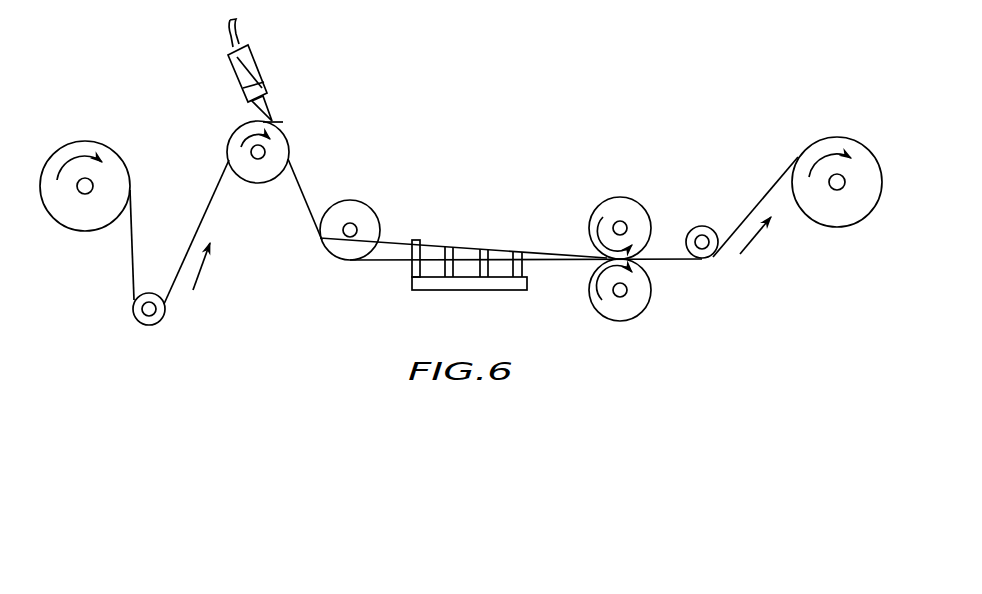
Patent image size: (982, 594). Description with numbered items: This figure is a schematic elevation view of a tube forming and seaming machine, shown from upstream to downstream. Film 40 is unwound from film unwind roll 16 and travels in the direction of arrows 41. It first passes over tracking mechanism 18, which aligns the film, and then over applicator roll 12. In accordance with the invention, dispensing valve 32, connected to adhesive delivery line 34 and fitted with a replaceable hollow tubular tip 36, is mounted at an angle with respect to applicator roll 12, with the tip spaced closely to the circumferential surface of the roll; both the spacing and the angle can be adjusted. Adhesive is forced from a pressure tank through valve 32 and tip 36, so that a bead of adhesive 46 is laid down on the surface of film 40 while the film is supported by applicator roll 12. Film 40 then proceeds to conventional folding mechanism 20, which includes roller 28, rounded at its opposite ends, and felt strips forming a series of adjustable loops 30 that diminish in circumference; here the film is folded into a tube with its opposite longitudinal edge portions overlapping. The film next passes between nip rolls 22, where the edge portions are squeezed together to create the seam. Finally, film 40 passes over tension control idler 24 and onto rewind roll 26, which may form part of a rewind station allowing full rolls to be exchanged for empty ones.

The applicator roll 12 is at (270, 174).
The film unwind roll 16 is at (117, 163).
The tracking mechanism 18 is at (144, 324).
The folding mechanism 20 is at (385, 283).
The nip rolls 22 is at (616, 318).
The tension control idler 24 is at (701, 226).
The rewind roll 26 is at (852, 220).
The roller 28 is at (362, 212).
The adjustable loops 30 is at (452, 246).
The dispensing valve 32 is at (257, 70).
The adhesive delivery line 34 is at (228, 28).
The tubular tip 36 is at (273, 110).
The film 40 is at (132, 244).
The arrows 41 is at (203, 270).
The bead of adhesive 46 is at (282, 124).